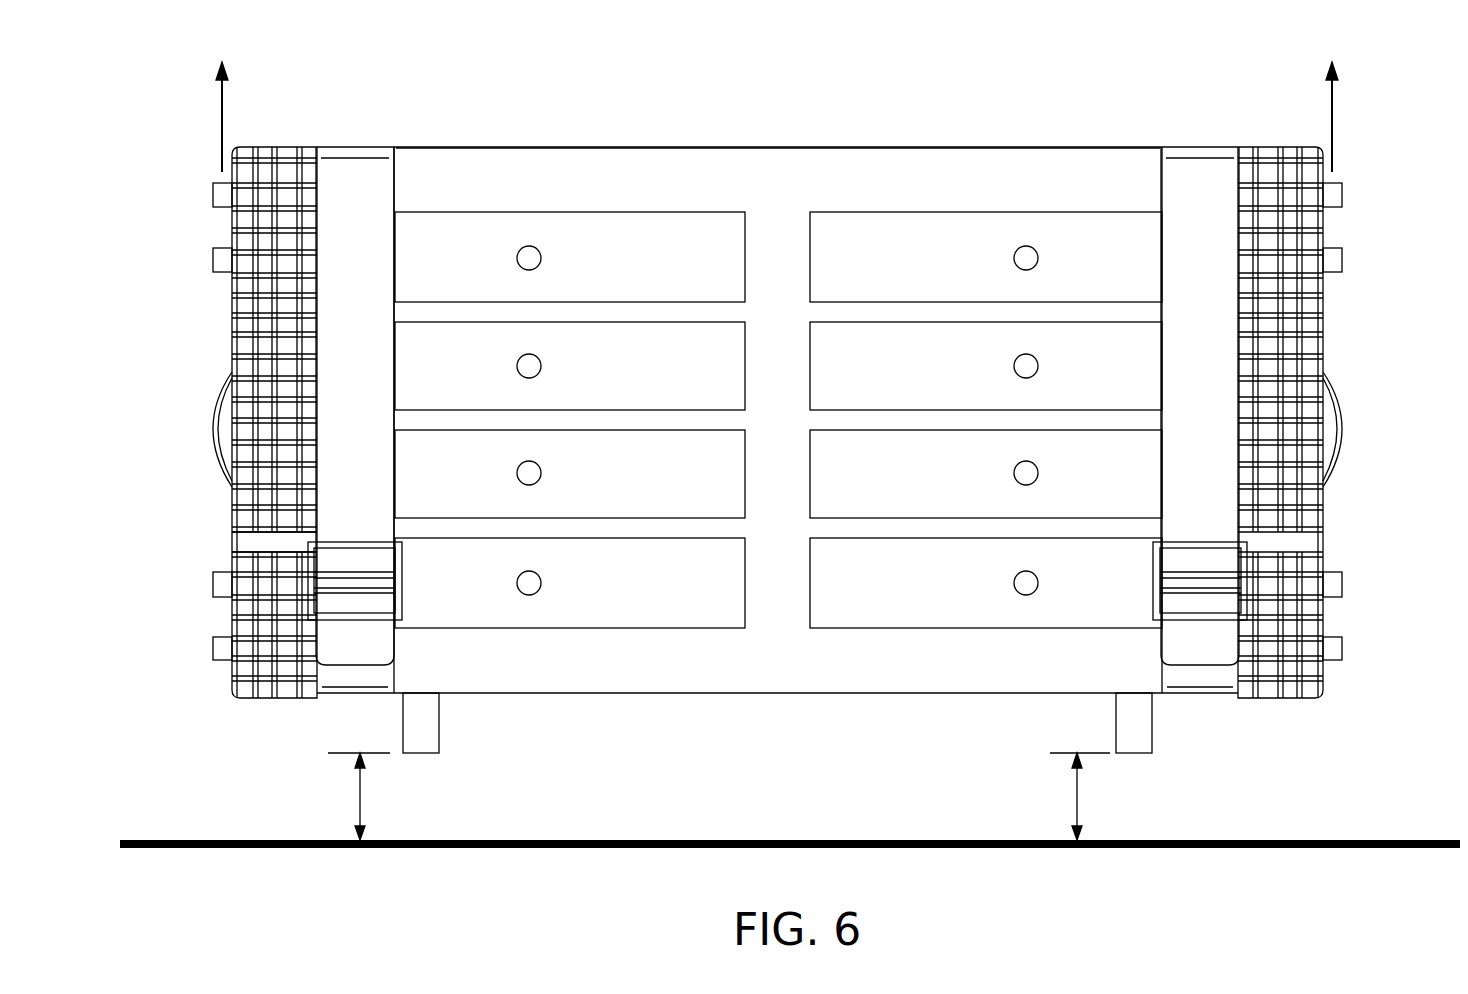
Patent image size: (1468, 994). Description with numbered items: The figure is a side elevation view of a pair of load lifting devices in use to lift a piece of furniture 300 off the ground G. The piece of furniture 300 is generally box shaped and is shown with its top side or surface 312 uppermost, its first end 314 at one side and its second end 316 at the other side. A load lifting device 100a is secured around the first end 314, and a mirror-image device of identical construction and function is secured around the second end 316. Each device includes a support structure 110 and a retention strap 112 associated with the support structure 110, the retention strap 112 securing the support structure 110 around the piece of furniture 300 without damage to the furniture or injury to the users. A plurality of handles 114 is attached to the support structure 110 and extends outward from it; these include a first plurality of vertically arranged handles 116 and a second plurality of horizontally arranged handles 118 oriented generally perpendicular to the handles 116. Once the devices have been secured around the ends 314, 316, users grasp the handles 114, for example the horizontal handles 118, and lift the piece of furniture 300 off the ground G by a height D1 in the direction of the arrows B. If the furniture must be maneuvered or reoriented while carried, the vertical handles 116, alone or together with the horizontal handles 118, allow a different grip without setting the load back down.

The piece of furniture 300 is at (768, 88).
The top side or surface 312 is at (634, 146).
The first end 314 is at (408, 134).
The second end 316 is at (1147, 135).
The retention strap 112 is at (357, 146).
The handles 114 is at (176, 365).
The support structure 110 is at (265, 146).
The second plurality of handles 118 is at (191, 240).
The first plurality of handles 116 is at (191, 438).
The load lifting device 100a is at (181, 287).
The ground G is at (757, 840).
The height D1 is at (726, 796).
The arrows B is at (777, 100).